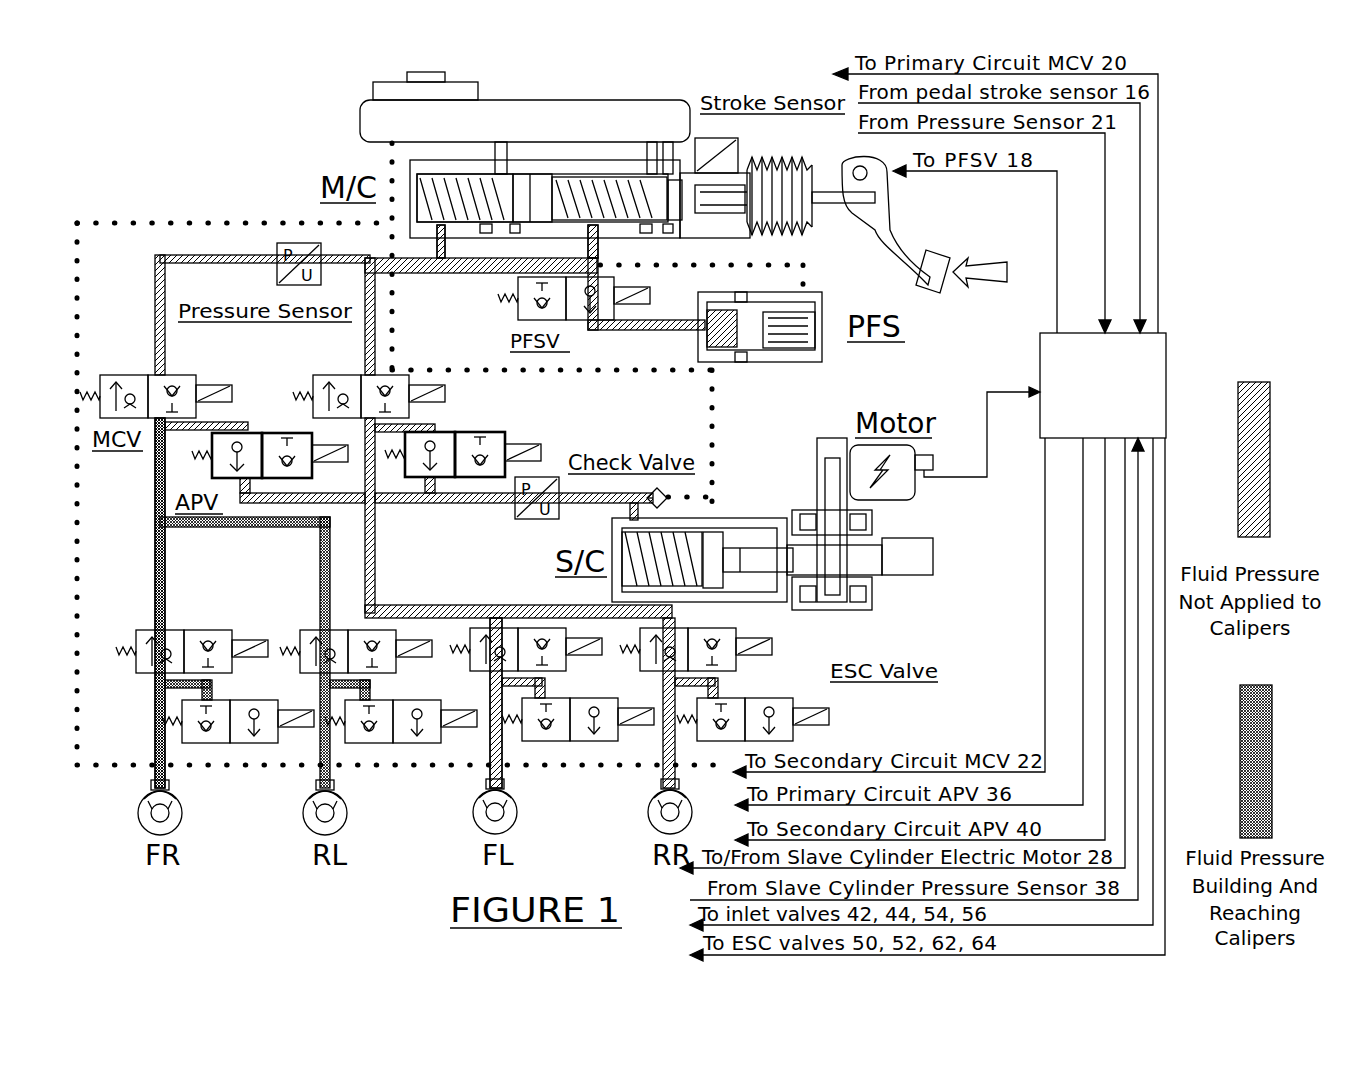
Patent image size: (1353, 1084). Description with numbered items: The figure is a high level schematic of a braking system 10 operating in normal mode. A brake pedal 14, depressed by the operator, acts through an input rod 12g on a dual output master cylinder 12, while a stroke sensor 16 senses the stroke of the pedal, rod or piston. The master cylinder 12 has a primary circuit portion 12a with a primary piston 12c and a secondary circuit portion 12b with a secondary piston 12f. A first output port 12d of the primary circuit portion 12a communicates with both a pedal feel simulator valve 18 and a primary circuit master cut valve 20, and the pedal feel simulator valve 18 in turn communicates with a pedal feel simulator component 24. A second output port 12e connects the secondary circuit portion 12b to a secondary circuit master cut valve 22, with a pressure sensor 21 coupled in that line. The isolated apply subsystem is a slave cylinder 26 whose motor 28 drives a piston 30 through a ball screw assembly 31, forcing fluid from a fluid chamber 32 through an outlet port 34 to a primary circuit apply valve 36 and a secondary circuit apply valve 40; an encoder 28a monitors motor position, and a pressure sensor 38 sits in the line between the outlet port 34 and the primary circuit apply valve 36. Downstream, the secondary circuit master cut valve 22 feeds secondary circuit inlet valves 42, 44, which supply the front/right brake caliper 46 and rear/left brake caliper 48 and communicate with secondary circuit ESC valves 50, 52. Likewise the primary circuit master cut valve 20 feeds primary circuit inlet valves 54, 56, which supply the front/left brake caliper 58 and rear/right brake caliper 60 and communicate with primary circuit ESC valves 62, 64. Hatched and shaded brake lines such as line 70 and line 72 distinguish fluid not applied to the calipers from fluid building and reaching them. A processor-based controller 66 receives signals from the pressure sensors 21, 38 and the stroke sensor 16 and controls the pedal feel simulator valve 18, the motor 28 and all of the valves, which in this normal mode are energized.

The braking system 10 is at (172, 124).
The master cylinder 12 is at (533, 193).
The primary circuit portion 12a is at (536, 148).
The secondary circuit portion 12b is at (420, 207).
The primary piston 12c is at (643, 160).
The first output port 12d is at (598, 240).
The second output port 12e is at (445, 240).
The secondary piston 12f is at (450, 150).
The input rod 12g is at (817, 200).
The brake pedal 14 is at (880, 227).
The stroke sensor 16 is at (704, 136).
The pedal feel simulator valve 18 is at (510, 296).
The primary circuit master cut valve 20 is at (343, 376).
The pressure sensor 21 is at (277, 250).
The secondary circuit master cut valve 22 is at (175, 376).
The pedal feel simulator component 24 is at (810, 361).
The slave cylinder 26 is at (892, 590).
The slave cylinder motor 28 is at (907, 480).
The isolated apply component position sensor 28a is at (937, 462).
The piston 30 is at (720, 550).
The ball screw assembly 31 is at (863, 540).
The fluid chamber 32 is at (630, 578).
The outlet port 34 is at (617, 523).
The primary circuit apply valve 36 is at (492, 432).
The pressure sensor 38 is at (548, 478).
The secondary circuit apply valve 40 is at (257, 432).
The secondary circuit inlet valve 42 is at (192, 630).
The secondary circuit inlet valve 44 is at (306, 630).
The front/right brake caliper 46 is at (140, 796).
The rear/left brake caliper 48 is at (300, 796).
The secondary circuit electronic stability control valve 50 is at (220, 697).
The secondary circuit electronic stability control valve 52 is at (402, 697).
The primary circuit inlet valve 54 is at (567, 662).
The primary circuit inlet valve 56 is at (738, 626).
The front/left brake caliper 58 is at (483, 745).
The rear/right brake caliper 60 is at (657, 797).
The primary circuit ESC valve 62 is at (557, 745).
The primary circuit ESC valve 64 is at (795, 700).
The controller 66 is at (1115, 419).
The secondary circuit brake line 70 is at (155, 722).
The primary circuit brake line 72 is at (441, 797).